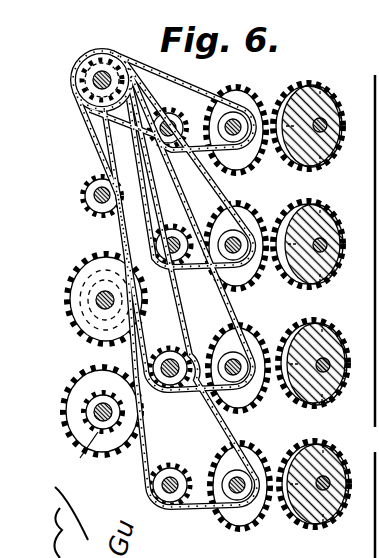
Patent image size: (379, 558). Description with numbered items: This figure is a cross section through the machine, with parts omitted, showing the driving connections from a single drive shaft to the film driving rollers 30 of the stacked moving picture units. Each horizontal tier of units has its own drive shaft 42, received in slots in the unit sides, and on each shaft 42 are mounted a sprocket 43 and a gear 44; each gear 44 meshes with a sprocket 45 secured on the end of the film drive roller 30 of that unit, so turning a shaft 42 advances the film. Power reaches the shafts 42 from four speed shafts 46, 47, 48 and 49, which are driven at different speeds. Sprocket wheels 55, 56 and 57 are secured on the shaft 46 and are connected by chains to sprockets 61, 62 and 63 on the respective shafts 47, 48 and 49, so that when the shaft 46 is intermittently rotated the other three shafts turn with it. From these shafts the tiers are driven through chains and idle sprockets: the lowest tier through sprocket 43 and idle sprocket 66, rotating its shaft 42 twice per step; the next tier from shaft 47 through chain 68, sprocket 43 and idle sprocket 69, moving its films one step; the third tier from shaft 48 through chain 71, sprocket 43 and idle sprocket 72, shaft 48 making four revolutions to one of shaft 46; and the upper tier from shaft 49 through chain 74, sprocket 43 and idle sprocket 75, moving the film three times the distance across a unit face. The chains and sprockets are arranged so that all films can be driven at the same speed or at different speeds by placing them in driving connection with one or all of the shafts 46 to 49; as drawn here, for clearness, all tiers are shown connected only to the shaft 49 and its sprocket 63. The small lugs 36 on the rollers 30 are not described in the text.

The film drive roller 30 is at (343, 132).
The key / stop lug 36 is at (320, 90).
The drive shaft 42 is at (234, 130).
The sprocket 43 is at (233, 118).
The gear 44 is at (252, 102).
The sprocket 45 is at (310, 86).
The shaft 46 is at (94, 416).
The shaft 47 is at (94, 310).
The shaft 48 is at (93, 200).
The shaft 49 is at (94, 88).
The sprocket wheel 55 is at (80, 453).
The sprocket wheel 56 is at (72, 405).
The sprocket wheel 57 is at (76, 384).
The sprocket 61 is at (78, 300).
The sprocket 62 is at (84, 190).
The sprocket 63 is at (80, 79).
The idle sprocket 66 is at (170, 466).
The chain 68 is at (136, 332).
The idle sprocket 69 is at (169, 351).
The chain 71 is at (110, 153).
The idle sprocket 72 is at (168, 230).
The chain 74 is at (127, 145).
The idle sprocket 75 is at (168, 112).